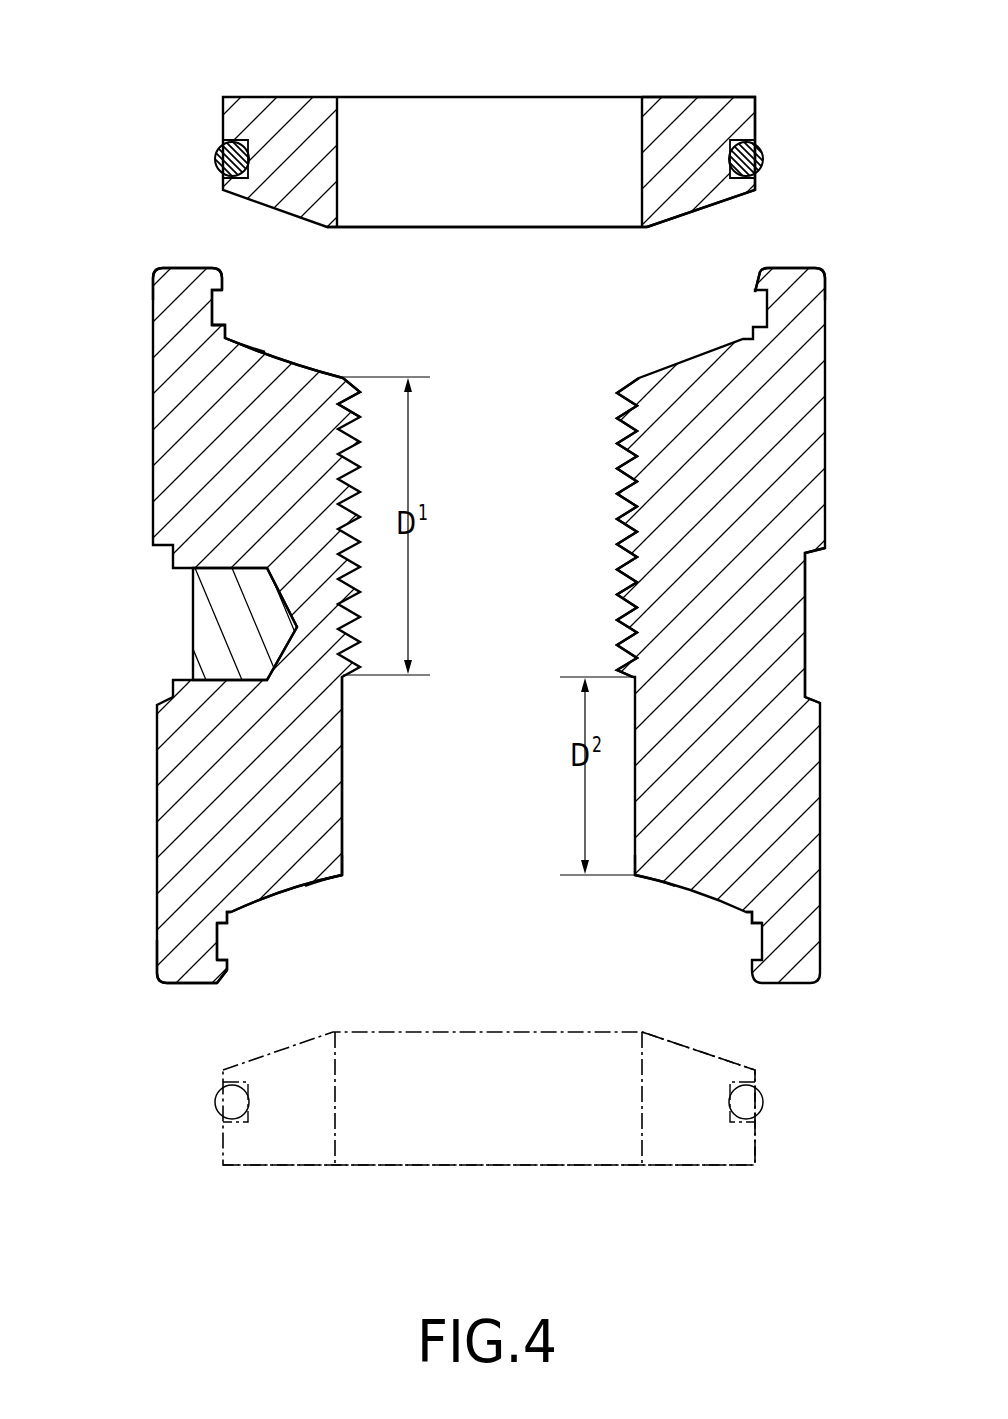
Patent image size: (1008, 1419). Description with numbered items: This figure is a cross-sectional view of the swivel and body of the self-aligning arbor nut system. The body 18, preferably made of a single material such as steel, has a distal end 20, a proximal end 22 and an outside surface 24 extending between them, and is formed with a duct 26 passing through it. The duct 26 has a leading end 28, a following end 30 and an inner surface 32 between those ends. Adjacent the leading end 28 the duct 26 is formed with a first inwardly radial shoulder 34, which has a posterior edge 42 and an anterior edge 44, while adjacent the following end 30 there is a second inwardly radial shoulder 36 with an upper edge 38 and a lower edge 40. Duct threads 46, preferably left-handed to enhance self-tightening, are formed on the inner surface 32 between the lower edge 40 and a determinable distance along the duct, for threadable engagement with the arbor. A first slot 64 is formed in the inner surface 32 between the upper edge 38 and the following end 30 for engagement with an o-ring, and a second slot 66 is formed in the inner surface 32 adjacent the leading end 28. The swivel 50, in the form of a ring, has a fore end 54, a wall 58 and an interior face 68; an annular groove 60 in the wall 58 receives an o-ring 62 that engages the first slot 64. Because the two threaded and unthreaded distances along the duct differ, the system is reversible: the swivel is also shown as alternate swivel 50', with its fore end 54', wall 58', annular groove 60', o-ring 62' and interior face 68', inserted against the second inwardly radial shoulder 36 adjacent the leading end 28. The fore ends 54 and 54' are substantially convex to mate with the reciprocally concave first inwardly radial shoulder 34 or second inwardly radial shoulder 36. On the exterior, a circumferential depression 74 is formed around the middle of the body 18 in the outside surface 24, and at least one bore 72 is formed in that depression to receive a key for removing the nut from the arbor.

The body 18 is at (826, 388).
The distal end 20 is at (190, 985).
The proximal end 22 is at (175, 268).
The outside surface 24 is at (153, 420).
The duct 26 is at (490, 918).
The leading end 28 is at (230, 975).
The following end 30 is at (770, 268).
The inner surface 32 is at (342, 740).
The first inwardly radial shoulder 34 is at (295, 360).
The second inwardly radial shoulder 36 is at (300, 900).
The upper edge 38 is at (235, 918).
The lower edge 40 is at (355, 875).
The posterior edge 42 is at (242, 338).
The anterior edge 44 is at (345, 378).
The duct threads 46 is at (620, 490).
The swivel 50 is at (489, 117).
The fore end 54 is at (489, 252).
The wall 58 is at (737, 147).
The annular groove 60 is at (782, 157).
The o-ring 62 is at (191, 164).
The first slot 64 is at (213, 312).
The second slot 66 is at (218, 945).
The interior face 68 is at (385, 130).
The bore 72 is at (193, 620).
The circumferential depression 74 is at (806, 620).
The alternate swivel 50' is at (489, 1140).
The fore end 54' is at (489, 1072).
The wall 58' is at (740, 1110).
The annular groove 60' is at (790, 1103).
The o-ring 62' is at (191, 1095).
The interior face 68' is at (389, 1127).